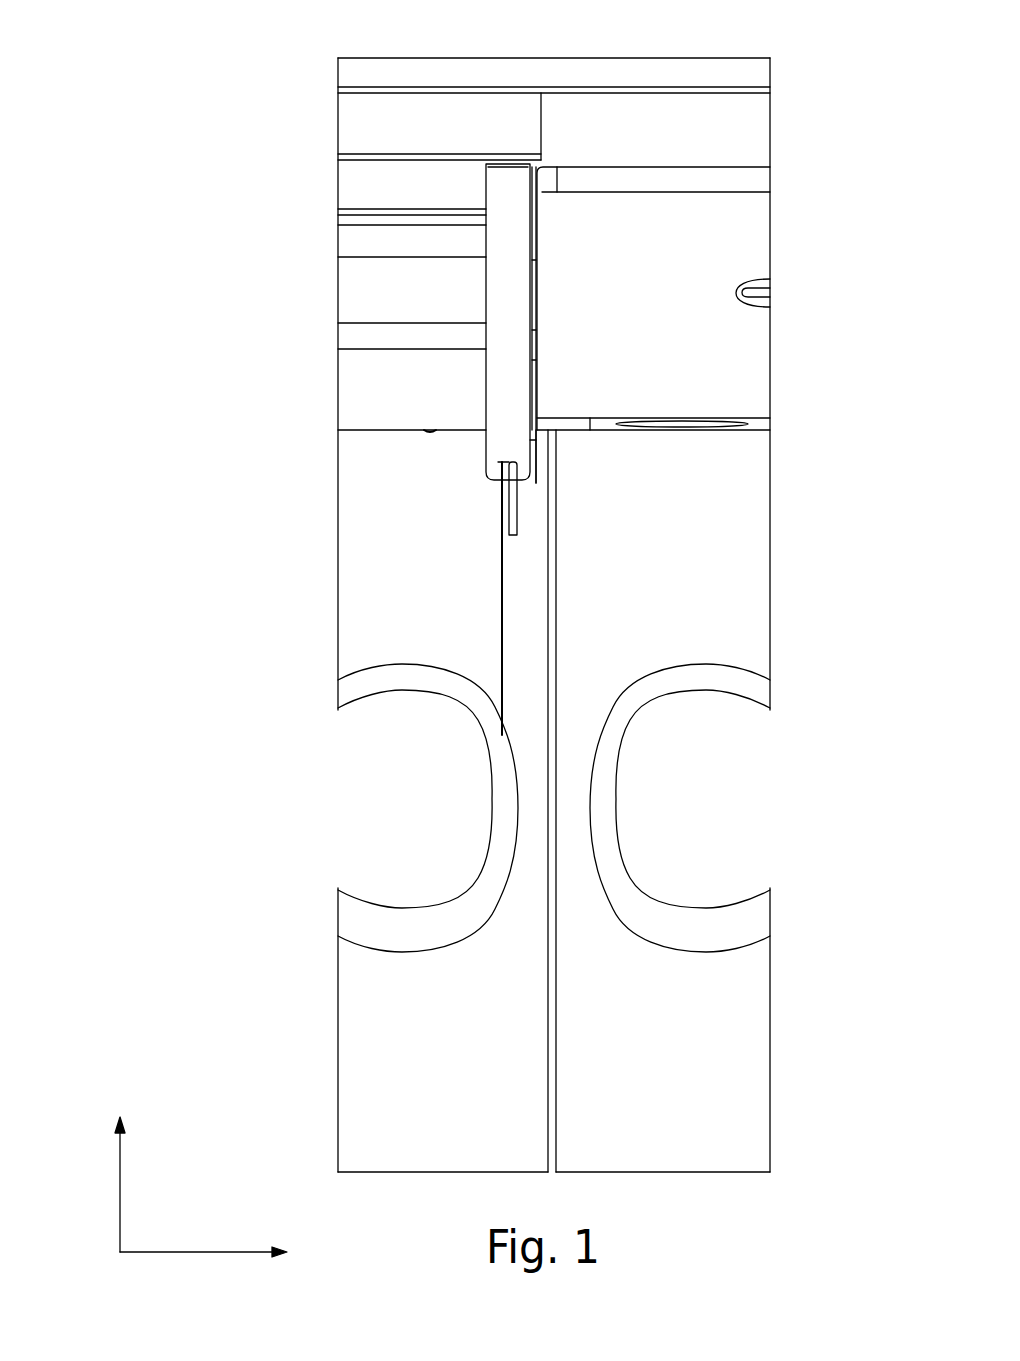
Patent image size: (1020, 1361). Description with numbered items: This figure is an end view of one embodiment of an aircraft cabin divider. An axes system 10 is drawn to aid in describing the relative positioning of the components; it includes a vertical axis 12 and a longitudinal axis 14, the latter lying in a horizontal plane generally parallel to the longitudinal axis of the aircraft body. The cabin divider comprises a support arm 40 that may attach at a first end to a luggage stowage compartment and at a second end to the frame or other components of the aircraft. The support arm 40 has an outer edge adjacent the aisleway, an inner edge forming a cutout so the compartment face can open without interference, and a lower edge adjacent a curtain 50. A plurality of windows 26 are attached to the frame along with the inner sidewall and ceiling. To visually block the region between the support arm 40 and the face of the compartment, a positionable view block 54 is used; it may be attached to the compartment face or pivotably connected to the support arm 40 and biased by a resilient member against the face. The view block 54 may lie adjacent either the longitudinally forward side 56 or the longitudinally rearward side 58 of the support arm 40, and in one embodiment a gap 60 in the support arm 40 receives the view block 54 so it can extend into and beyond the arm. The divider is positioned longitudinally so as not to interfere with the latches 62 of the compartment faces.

The axes system 10 is at (168, 1202).
The vertical axis 12 is at (120, 1200).
The longitudinal axis 14 is at (223, 1253).
The windows 26 is at (470, 881).
The support arm 40 is at (483, 400).
The curtain 50 is at (500, 612).
The view block 54 is at (535, 465).
The longitudinally forward side 56 is at (480, 183).
The longitudinally rearward side 58 is at (542, 227).
The gap 60 is at (510, 463).
The latches 62 is at (770, 283).